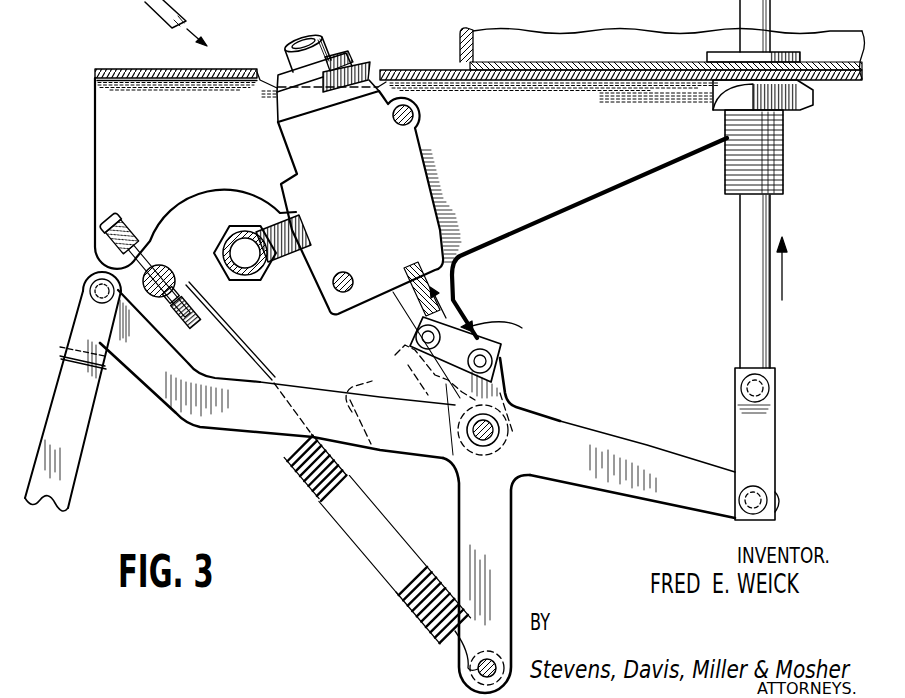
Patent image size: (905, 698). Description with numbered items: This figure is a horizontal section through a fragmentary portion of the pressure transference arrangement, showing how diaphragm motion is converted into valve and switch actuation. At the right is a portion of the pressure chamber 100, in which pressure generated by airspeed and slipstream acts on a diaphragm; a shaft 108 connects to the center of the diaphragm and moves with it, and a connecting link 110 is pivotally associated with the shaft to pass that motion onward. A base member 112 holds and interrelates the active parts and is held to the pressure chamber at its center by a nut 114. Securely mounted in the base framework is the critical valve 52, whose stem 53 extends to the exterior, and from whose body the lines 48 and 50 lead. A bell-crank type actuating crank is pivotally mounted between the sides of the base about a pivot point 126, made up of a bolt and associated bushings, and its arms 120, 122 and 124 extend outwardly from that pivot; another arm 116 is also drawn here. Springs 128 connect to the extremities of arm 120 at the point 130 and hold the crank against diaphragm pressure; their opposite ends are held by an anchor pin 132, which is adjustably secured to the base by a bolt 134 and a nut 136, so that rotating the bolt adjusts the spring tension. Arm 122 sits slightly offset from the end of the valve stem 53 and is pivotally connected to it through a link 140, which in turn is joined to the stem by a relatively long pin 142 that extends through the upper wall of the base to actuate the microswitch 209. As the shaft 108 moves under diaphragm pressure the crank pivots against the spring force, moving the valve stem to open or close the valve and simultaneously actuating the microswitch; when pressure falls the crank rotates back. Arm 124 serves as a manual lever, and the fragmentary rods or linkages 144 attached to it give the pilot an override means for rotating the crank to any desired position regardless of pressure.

The base member 112 is at (126, 142).
The pressure chamber 100 is at (638, 40).
The shaft 108 is at (753, 288).
The nut 114 is at (780, 97).
The connecting link 110 is at (763, 430).
The bell crank arm 116 is at (667, 423).
The arm 120 is at (498, 532).
The arm 122 is at (508, 380).
The pivot point 126 is at (500, 437).
The spring connection 130 is at (470, 672).
The springs 128 is at (417, 613).
The arm 124 is at (223, 410).
The override linkage 144 is at (80, 428).
The bolt 134 is at (104, 228).
The anchor pin 132 is at (168, 266).
The nut 136 is at (197, 290).
The line 48 is at (283, 246).
The line 50 is at (327, 42).
The critical valve 52 is at (433, 190).
The valve stem 53 is at (412, 302).
The link 140 is at (422, 386).
The pin 142 is at (456, 318).
The microswitch 209 is at (417, 428).